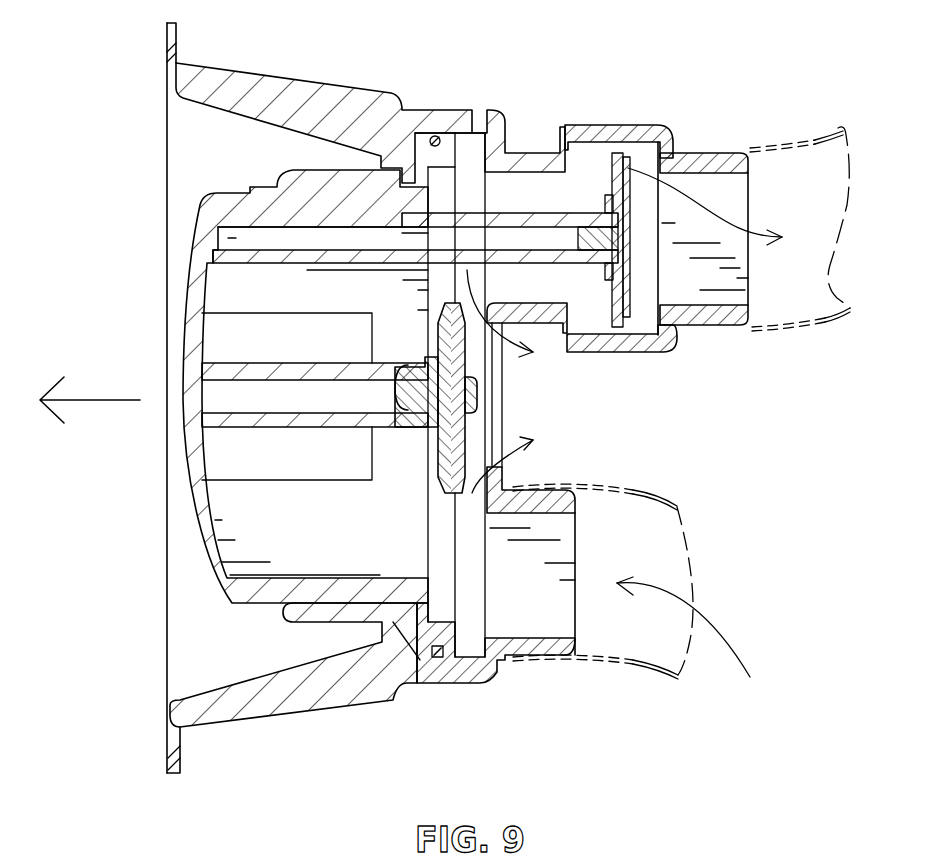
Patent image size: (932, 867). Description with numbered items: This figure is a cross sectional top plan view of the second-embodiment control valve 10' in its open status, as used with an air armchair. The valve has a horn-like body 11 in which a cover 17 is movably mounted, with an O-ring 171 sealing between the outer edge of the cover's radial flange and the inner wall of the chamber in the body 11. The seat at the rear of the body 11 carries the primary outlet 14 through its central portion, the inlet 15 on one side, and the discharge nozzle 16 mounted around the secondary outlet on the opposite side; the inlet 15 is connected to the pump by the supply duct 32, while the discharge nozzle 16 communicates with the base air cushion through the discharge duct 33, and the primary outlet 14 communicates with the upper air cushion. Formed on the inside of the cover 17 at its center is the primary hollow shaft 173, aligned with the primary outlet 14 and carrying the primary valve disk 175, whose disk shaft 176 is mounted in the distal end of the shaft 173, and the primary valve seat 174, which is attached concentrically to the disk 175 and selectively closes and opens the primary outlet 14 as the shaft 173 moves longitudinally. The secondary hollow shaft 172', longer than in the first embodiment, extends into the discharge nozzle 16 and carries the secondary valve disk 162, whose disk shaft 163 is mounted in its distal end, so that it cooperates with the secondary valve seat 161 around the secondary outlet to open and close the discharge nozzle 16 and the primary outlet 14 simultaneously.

The control valve 10' is at (282, 386).
The horn-like body 11 is at (367, 97).
The cover 17 is at (227, 213).
The primary outlet 14 is at (502, 433).
The disk shaft 163 is at (580, 240).
The discharge nozzle 16 is at (676, 142).
The secondary hollow shaft 172' is at (654, 194).
The secondary valve seat 161 is at (617, 155).
The secondary valve disk 162 is at (628, 172).
The discharge duct 33 is at (832, 128).
The primary hollow shaft 173 is at (341, 367).
The disk shaft 176 is at (406, 398).
The primary valve seat 174 is at (463, 340).
The primary valve disk 175 is at (438, 460).
The inlet 15 is at (481, 553).
The O-ring 171 is at (443, 653).
The supply duct 32 is at (607, 667).